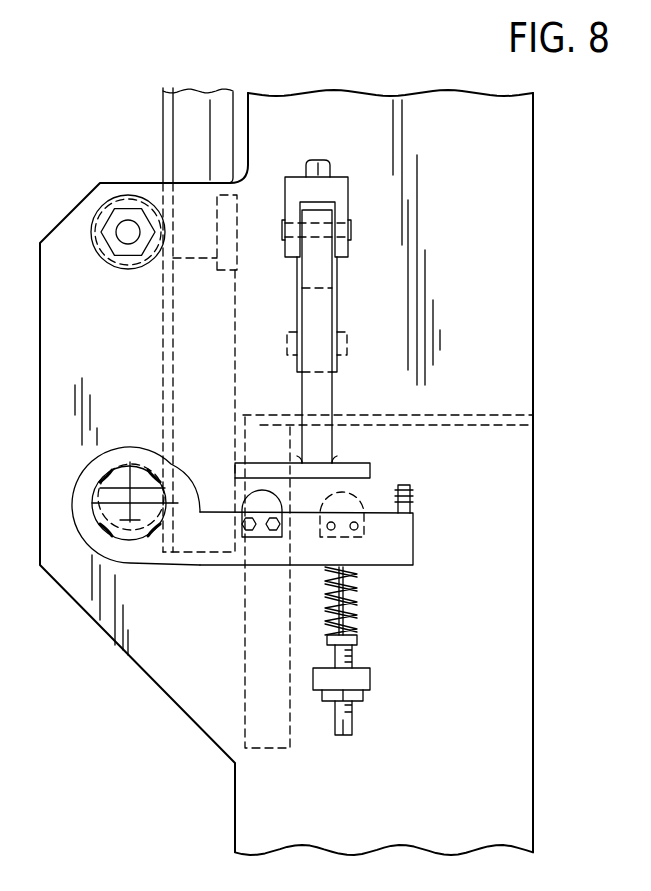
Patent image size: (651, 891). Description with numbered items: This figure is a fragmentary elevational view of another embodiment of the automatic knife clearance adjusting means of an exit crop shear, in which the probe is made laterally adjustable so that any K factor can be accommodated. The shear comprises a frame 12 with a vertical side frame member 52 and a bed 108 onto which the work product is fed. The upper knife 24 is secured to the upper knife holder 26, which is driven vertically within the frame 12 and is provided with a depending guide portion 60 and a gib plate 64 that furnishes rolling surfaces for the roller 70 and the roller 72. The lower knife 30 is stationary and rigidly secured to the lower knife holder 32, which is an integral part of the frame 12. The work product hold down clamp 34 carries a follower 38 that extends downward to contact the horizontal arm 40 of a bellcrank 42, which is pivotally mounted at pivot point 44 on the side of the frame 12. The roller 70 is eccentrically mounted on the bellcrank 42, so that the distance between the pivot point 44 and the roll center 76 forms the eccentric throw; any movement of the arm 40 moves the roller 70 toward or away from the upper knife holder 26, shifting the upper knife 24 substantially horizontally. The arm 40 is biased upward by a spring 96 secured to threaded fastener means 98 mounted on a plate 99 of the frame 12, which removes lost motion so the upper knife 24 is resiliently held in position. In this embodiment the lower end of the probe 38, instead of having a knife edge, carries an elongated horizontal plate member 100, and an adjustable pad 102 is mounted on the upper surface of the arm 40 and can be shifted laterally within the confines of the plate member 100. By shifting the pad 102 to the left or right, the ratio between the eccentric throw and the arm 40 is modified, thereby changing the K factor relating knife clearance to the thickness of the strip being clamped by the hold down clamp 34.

The frame 12 is at (536, 222).
The upper knife 24 is at (234, 240).
The upper knife holder 26 is at (228, 120).
The lower knife 30 is at (250, 413).
The lower knife holder 32 is at (250, 637).
The hold down clamp 34 is at (348, 340).
The follower 38 is at (322, 400).
The horizontal arm 40 is at (405, 548).
The bellcrank 42 is at (200, 566).
The pivot point 44 is at (117, 513).
The vertical side frame member 52 is at (516, 343).
The depending guide portion 60 is at (200, 107).
The gib plate 64 is at (163, 113).
The roller 70 is at (145, 447).
The roller 72 is at (118, 197).
The roll center 76 is at (128, 487).
The spring 96 is at (360, 612).
The threaded fastener means 98 is at (348, 660).
The plate 99 is at (363, 680).
The elongated horizontal plate member 100 is at (355, 472).
The adjustable pad 102 is at (243, 498).
The bed 108 is at (495, 415).